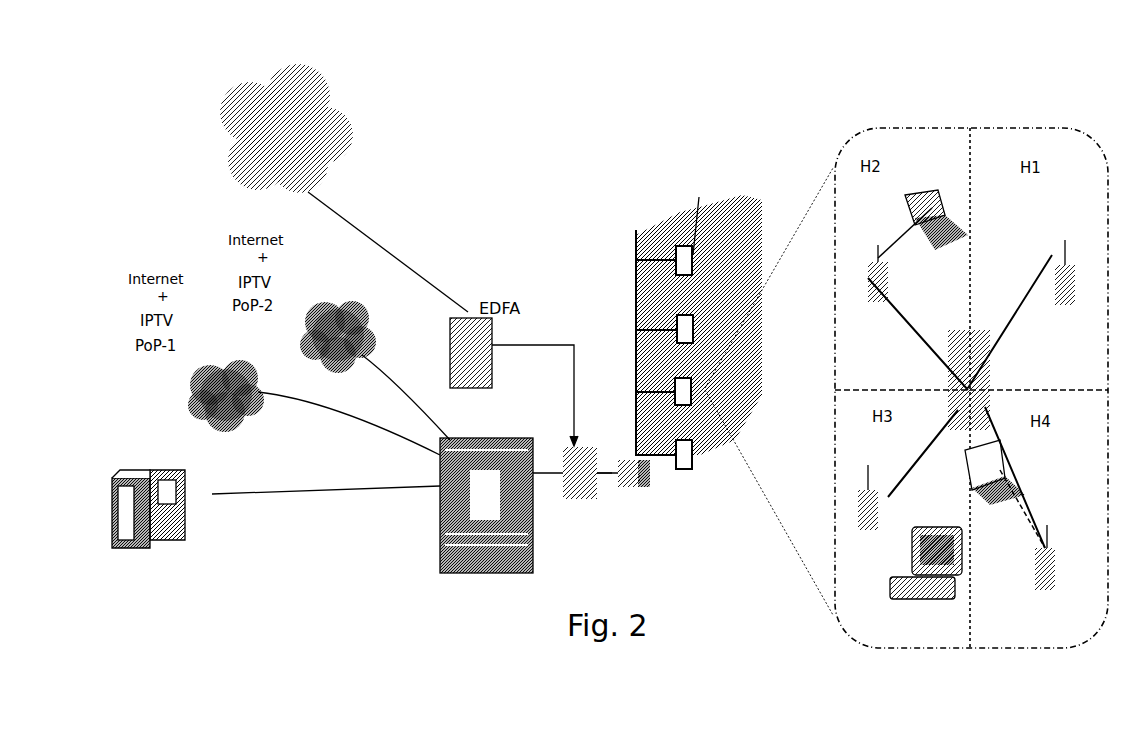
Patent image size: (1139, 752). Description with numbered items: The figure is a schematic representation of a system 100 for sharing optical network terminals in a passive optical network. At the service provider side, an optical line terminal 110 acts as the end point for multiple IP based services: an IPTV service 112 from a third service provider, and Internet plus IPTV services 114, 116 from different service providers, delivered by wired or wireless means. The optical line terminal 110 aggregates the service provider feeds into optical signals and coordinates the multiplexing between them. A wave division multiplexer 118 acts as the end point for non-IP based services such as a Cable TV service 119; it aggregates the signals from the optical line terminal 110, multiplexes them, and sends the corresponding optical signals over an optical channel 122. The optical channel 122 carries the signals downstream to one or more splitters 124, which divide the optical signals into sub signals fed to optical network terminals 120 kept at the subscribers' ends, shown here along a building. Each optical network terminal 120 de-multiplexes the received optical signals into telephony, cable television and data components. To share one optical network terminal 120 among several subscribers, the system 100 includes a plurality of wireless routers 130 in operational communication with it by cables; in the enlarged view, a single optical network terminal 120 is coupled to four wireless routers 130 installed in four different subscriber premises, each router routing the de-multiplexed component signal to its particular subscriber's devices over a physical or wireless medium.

The system 100 is at (962, 99).
The optical line terminal 110 is at (440, 510).
The IPTV service 112 is at (128, 460).
The Internet+IPTV service 114 is at (255, 410).
The Internet+IPTV service 116 is at (368, 362).
The wave division multiplexer 118 is at (572, 444).
The Cable TV service 119 is at (343, 152).
The optical network terminal 120 is at (683, 255).
The optical channel 122 is at (612, 473).
The splitter 124 is at (643, 487).
The wireless router 130 is at (966, 437).